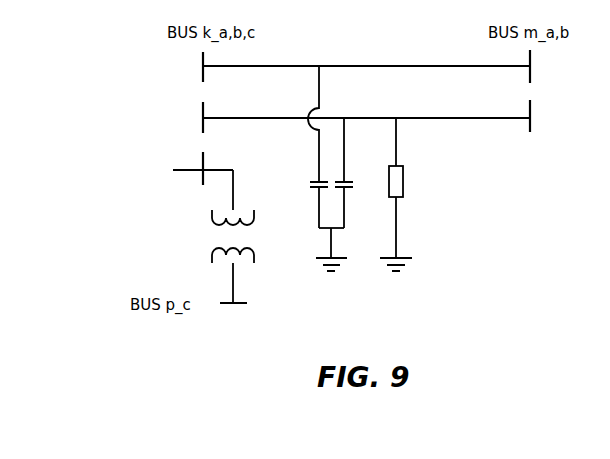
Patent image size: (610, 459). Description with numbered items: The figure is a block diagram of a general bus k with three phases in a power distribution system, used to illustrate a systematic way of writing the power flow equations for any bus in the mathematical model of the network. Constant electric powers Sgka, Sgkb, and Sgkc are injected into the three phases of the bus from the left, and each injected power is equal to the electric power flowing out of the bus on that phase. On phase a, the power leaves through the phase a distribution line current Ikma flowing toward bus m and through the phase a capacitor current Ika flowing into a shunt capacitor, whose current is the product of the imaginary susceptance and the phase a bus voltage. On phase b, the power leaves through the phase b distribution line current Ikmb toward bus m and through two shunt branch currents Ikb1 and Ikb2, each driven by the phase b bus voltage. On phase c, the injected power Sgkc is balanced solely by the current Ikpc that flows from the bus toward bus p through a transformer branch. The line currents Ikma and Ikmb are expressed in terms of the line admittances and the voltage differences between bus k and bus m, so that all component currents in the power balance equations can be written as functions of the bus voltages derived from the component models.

The constant electric power injected to bus k phase a Sgka is at (202, 66).
The constant electric power injected to bus k phase b Sgkb is at (202, 118).
The constant electric power injected to bus k phase c Sgkc is at (141, 161).
The current from bus k to bus p on phase c Ikpc is at (227, 143).
The phase a capacitor current Ika is at (304, 141).
The first phase b shunt component current Ikb1 is at (362, 141).
The second phase b shunt component current Ikb2 is at (419, 141).
The phase a distribution line current Ikma is at (416, 30).
The phase b distribution line current Ikmb is at (416, 85).